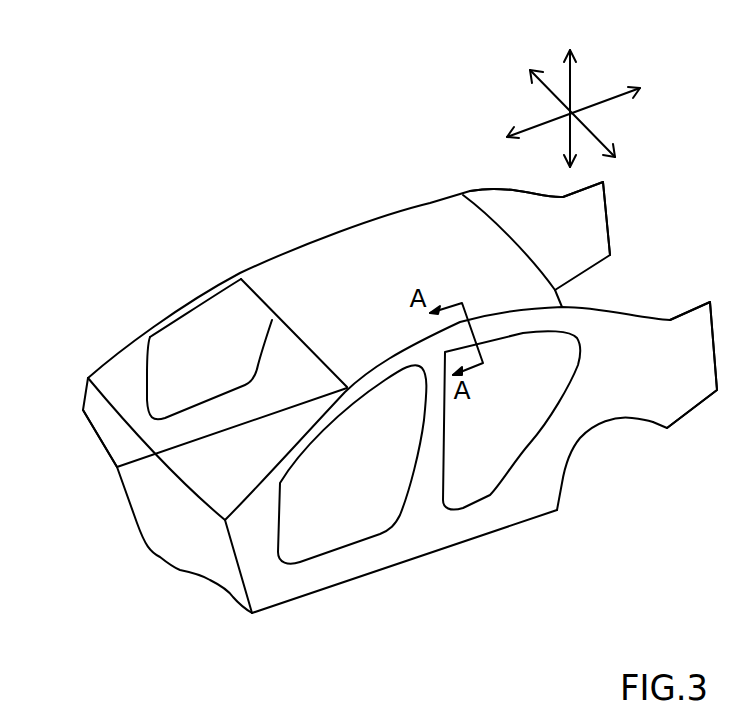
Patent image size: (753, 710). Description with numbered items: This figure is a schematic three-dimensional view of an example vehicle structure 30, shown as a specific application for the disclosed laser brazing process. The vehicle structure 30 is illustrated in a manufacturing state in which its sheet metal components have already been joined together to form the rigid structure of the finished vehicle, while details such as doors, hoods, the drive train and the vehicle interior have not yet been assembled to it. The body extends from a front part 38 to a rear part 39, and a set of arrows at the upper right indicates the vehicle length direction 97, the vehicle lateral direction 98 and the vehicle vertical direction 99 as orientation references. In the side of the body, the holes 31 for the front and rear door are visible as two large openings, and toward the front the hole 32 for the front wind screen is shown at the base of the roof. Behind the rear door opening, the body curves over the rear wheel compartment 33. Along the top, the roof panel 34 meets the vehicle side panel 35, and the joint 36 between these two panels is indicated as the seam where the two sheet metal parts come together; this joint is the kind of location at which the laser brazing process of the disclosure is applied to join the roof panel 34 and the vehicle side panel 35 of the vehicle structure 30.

The vehicle structure 30 is at (197, 215).
The holes for the front and rear door 31 is at (197, 337).
The hole for the front wind screen 32 is at (247, 403).
The rear wheel compartment 33 is at (613, 455).
The roof panel 34 is at (363, 295).
The vehicle side panel 35 is at (482, 328).
The joint 36 is at (491, 315).
The front part 38 is at (152, 512).
The rear part 39 is at (640, 275).
The vehicle length direction 97 is at (588, 97).
The vehicle lateral direction 98 is at (552, 108).
The vehicle vertical direction 99 is at (573, 94).